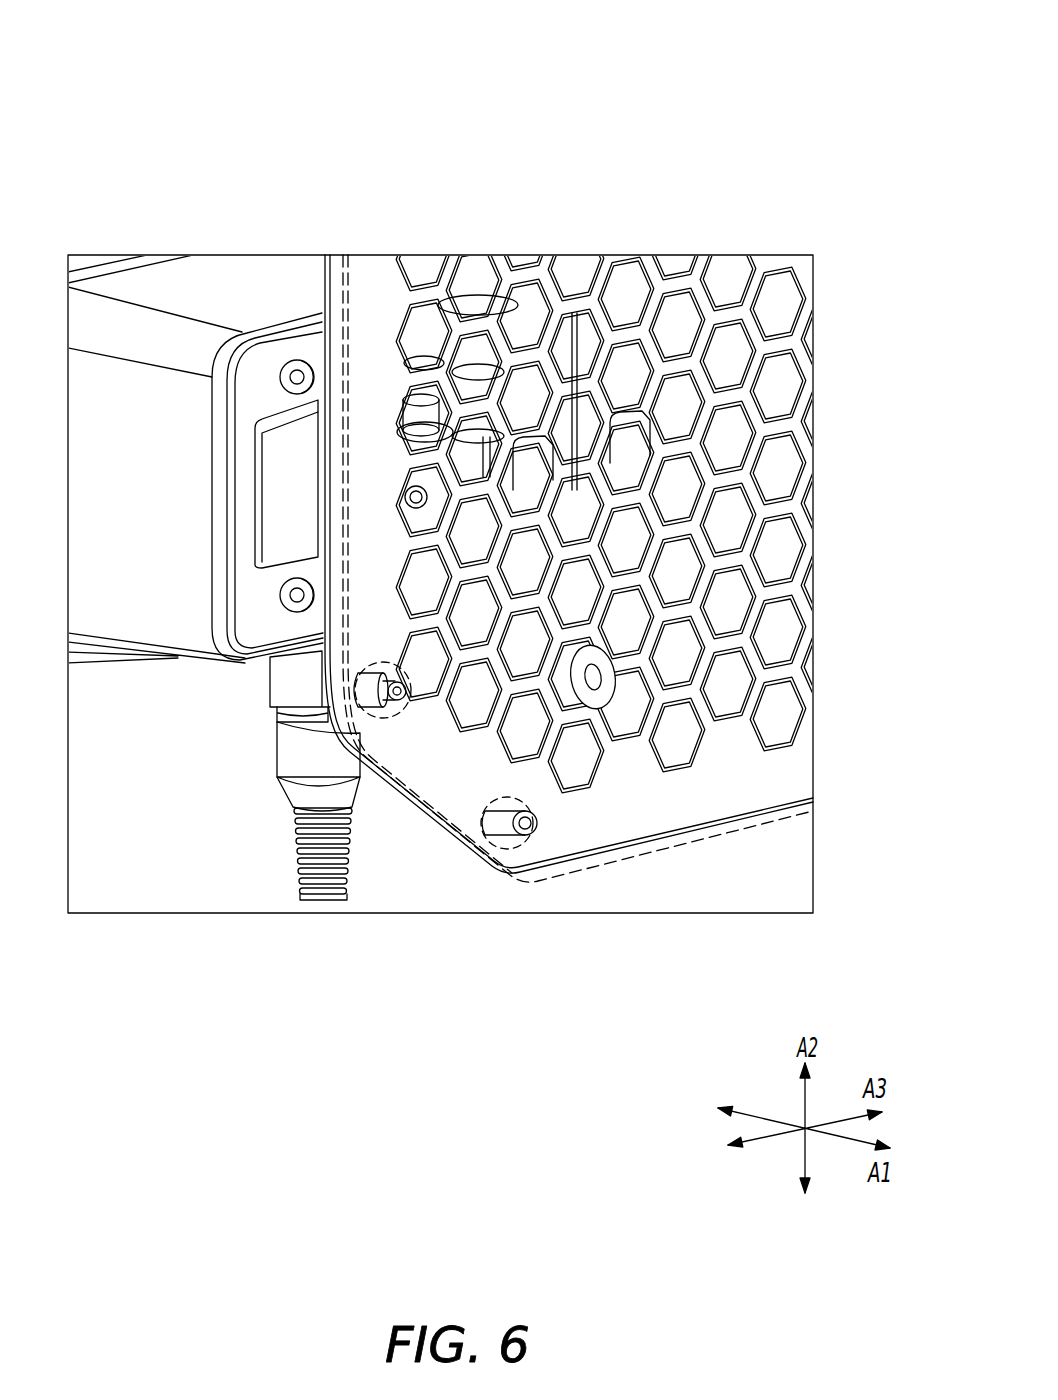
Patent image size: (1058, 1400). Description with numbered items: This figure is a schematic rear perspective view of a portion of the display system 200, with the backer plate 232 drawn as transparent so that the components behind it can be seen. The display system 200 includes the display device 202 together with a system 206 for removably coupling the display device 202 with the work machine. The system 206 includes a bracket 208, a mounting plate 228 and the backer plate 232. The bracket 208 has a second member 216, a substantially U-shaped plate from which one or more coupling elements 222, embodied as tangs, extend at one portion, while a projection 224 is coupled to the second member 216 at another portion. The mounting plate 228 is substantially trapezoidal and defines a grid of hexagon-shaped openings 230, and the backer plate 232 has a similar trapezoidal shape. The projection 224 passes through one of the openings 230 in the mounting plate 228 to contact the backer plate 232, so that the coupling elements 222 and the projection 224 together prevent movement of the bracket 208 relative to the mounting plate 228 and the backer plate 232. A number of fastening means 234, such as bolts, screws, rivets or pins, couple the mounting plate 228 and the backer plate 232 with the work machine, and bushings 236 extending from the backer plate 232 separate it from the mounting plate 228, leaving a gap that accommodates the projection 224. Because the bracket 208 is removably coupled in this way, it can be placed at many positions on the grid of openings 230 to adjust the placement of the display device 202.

The display system 200 is at (790, 50).
The display device 202 is at (223, 287).
The system for removably coupling the display device 206 is at (569, 664).
The bracket 208 is at (400, 700).
The second member 216 is at (568, 607).
The coupling elements 222 is at (537, 460).
The projection 224 is at (608, 682).
The mounting plate 228 is at (445, 840).
The openings 230 is at (742, 338).
The backer plate 232 is at (383, 990).
The fastening means 234 is at (505, 658).
The bushings 236 is at (385, 760).